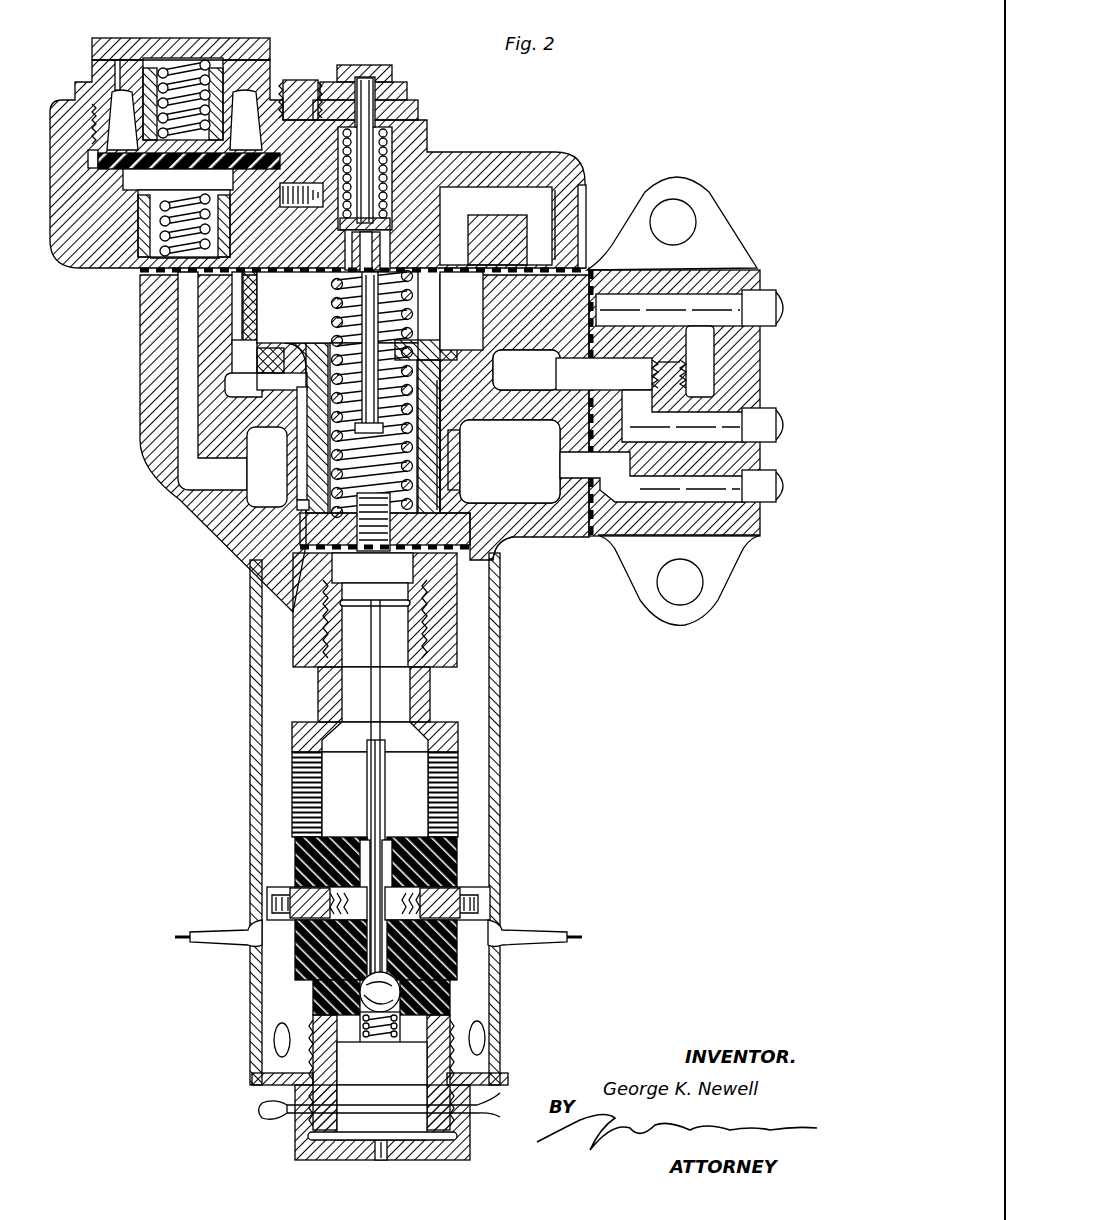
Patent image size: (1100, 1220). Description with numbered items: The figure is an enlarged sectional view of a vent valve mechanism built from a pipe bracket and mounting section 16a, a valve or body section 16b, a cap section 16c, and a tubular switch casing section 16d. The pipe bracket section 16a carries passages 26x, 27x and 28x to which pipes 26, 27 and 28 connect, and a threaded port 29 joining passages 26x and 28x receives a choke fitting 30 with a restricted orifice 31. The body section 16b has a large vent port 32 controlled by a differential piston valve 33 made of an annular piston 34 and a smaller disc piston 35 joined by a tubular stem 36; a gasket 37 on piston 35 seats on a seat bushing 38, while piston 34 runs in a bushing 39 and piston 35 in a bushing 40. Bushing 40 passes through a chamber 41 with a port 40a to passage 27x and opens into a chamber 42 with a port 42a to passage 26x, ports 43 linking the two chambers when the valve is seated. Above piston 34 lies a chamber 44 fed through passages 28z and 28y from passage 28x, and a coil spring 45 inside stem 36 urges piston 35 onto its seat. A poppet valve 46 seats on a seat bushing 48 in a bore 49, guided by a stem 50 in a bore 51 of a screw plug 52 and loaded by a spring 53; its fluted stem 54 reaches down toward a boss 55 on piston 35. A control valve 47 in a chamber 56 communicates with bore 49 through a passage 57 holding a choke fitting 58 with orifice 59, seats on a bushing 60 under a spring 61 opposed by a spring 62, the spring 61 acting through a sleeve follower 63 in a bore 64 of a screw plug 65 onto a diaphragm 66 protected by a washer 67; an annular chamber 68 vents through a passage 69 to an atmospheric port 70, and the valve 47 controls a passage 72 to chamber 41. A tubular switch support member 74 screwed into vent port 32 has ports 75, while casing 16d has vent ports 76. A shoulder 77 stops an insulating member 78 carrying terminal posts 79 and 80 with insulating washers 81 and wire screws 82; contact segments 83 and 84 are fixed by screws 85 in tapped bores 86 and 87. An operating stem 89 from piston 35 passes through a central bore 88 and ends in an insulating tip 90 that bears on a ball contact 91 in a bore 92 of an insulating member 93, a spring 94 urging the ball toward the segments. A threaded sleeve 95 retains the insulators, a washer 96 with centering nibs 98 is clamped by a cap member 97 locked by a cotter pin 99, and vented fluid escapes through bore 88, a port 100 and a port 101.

The pipe bracket and mounting section 16a is at (745, 272).
The valve or body section 16b is at (142, 425).
The cap section 16c is at (545, 140).
The switch casing section 16d is at (499, 670).
The pipe 26 is at (760, 420).
The passage 26x is at (755, 438).
The pipe 27 is at (760, 488).
The passage 27x is at (765, 520).
The pipe 28 is at (762, 300).
The passage 28x is at (752, 322).
The passage 28y is at (582, 245).
The passage 28z is at (560, 200).
The port 29 is at (690, 365).
The choke fitting 30 is at (655, 370).
The restricted orifice 31 is at (660, 385).
The vent port 32 is at (335, 590).
The differential piston valve 33 is at (437, 443).
The annular piston 34 is at (452, 340).
The disc type piston 35 is at (320, 520).
The tubular stem 36 is at (430, 467).
The annular gasket 37 is at (300, 546).
The seat bushing 38 is at (420, 580).
The bushing 39 is at (485, 305).
The bushing 40 is at (455, 520).
The port 40a is at (565, 462).
The chamber 41 is at (403, 463).
The chamber 42 is at (392, 369).
The port 42a is at (562, 372).
The ports 43 is at (300, 470).
The chamber 44 is at (337, 392).
The coil spring 45 is at (336, 326).
The poppet valve 46 is at (392, 224).
The control valve 47 is at (155, 192).
The seat bushing 48 is at (382, 250).
The bore 49 is at (388, 140).
The cylindrical guiding stem 50 is at (372, 162).
The bore 51 is at (395, 85).
The screw plug 52 is at (352, 65).
The coil spring 53 is at (420, 105).
The fluted stem 54 is at (345, 262).
The boss 55 is at (300, 505).
The chamber 56 is at (125, 180).
The passage 57 is at (262, 274).
The choke fitting 58 is at (310, 115).
The restricted orifice 59 is at (310, 195).
The seat bushing 60 is at (165, 250).
The spring 61 is at (190, 60).
The spring 62 is at (145, 300).
The sleeve type follower 63 is at (290, 80).
The bore 64 is at (215, 68).
The screw plug 65 is at (118, 40).
The flexible diaphragm 66 is at (125, 160).
The protective washer 67 is at (90, 155).
The annular chamber 68 is at (112, 105).
The passage 69 is at (115, 70).
The atmospheric port 70 is at (95, 58).
The passage 72 is at (186, 322).
The tubular switch support member 74 is at (442, 725).
The ports 75 is at (300, 765).
The vent ports 76 is at (268, 1040).
The annular shoulder 77 is at (316, 840).
The cylindrical member of insulating material 78 is at (440, 860).
The terminal post 79 is at (300, 890).
The terminal post 80 is at (452, 890).
The insulating washers 81 is at (296, 855).
The screws 82 is at (260, 900).
The arcuate contact segment 83 is at (325, 962).
The arcuate contact segment 84 is at (440, 987).
The screw 85 is at (310, 945).
The tapped bore 86 is at (356, 855).
The tapped bore 87 is at (410, 880).
The central bore 88 is at (381, 832).
The operating stem 89 is at (368, 768).
The insulating tip 90 is at (360, 990).
The ball contact 91 is at (440, 1030).
The cylindrical bore 92 is at (358, 1050).
The cylindrical insulating member 93 is at (320, 1030).
The coil spring 94 is at (383, 1040).
The threaded sleeve 95 is at (335, 1090).
The annular member or washer 96 is at (282, 1100).
The cap member 97 is at (472, 1150).
The centering nibs 98 is at (256, 1078).
The cotter pin 99 is at (365, 1140).
The port 100 is at (385, 1040).
The port 101 is at (385, 1150).